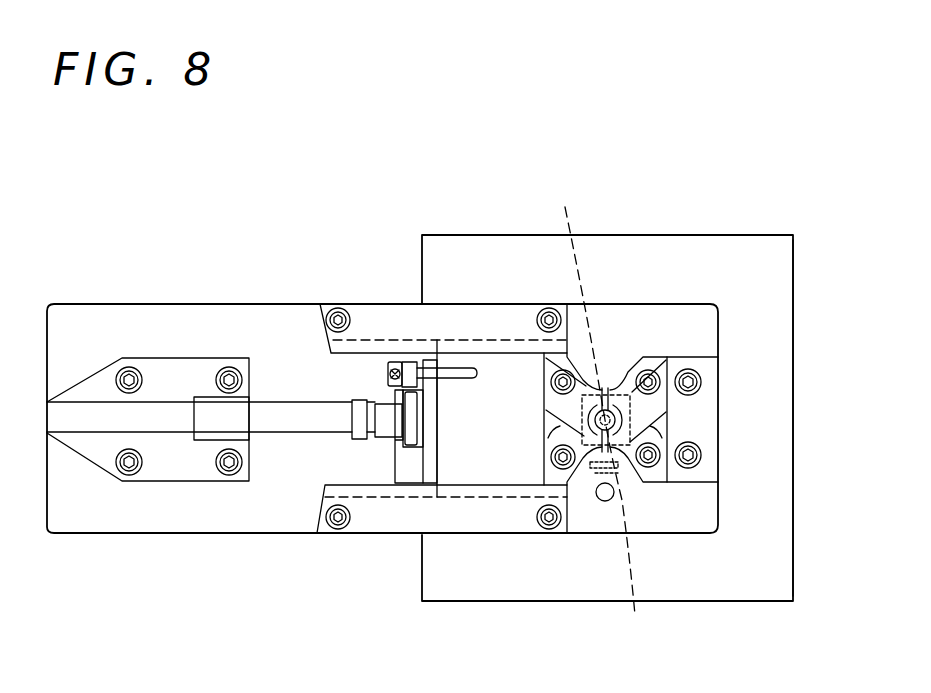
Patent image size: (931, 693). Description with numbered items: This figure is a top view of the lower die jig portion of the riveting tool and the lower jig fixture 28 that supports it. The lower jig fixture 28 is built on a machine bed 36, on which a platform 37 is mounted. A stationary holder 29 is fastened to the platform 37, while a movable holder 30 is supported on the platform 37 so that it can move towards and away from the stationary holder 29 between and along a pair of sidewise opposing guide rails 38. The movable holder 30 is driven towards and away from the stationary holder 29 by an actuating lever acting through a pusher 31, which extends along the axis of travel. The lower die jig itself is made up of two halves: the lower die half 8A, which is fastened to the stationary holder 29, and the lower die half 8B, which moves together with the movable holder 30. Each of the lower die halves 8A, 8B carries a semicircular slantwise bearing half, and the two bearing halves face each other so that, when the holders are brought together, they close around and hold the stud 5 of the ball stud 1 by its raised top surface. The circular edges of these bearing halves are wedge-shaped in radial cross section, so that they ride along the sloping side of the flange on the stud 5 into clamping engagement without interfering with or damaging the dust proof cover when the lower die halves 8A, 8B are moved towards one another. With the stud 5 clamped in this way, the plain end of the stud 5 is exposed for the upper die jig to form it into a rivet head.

The lower jig fixture 28 is at (715, 232).
The platform 37 is at (272, 324).
The pusher 31 is at (298, 423).
The guide rails 38 is at (388, 318).
The movable holder 30 is at (495, 393).
The stationary holder 29 is at (657, 320).
The lower die half 8B is at (553, 432).
The lower die half 8A is at (657, 433).
The stud 5 is at (631, 602).
The ball stud 1 is at (593, 397).
The machine bed 36 is at (758, 288).